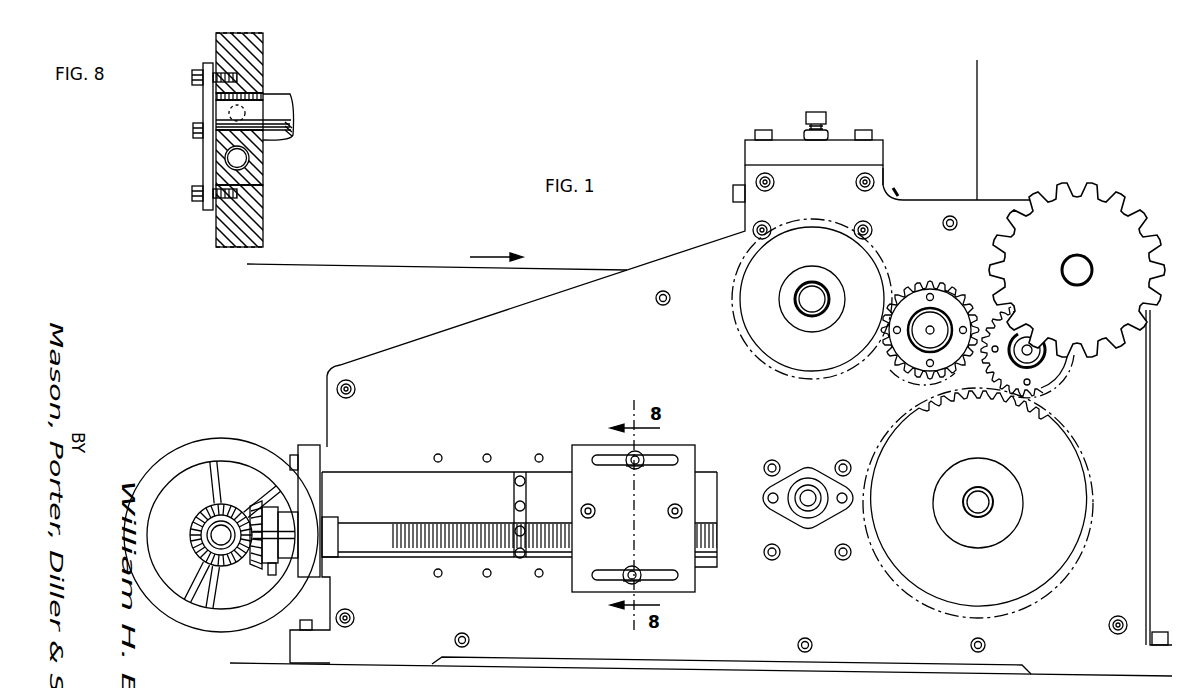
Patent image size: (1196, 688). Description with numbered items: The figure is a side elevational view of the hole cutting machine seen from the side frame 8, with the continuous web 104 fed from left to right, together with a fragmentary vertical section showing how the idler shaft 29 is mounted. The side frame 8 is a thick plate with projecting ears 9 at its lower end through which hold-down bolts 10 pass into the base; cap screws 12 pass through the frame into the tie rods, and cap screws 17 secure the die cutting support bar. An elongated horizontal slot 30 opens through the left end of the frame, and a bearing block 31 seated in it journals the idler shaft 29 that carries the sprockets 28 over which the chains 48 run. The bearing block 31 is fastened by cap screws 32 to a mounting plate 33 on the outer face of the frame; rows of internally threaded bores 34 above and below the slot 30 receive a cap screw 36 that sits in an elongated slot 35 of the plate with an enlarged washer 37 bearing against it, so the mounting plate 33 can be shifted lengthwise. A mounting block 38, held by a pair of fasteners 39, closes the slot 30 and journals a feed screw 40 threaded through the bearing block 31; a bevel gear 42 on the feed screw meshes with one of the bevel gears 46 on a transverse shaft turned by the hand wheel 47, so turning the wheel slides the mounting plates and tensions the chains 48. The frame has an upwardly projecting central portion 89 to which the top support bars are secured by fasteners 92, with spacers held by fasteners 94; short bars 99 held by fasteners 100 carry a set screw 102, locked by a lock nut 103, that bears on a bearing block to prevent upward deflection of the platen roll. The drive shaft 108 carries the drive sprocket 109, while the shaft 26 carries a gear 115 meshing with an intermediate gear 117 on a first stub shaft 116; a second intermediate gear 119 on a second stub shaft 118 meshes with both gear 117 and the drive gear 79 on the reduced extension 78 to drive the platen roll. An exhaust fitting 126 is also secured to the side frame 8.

In FIG. 8, the side frame 8 is at (258, 232).
In FIG. 1, the side frame 8 is at (437, 345).
In FIG. 1, the projecting ears 9 is at (290, 648).
In FIG. 1, the hold-down bolts 10 is at (318, 611).
In FIG. 1, the cap screws 12 is at (356, 389).
In FIG. 1, the cap screws 17 is at (774, 460).
In FIG. 1, the shaft 26 is at (993, 500).
In FIG. 1, the sprockets 28 is at (518, 514).
In FIG. 8, the idler shaft 29 is at (292, 98).
In FIG. 8, the elongated horizontal slot 30 is at (262, 175).
In FIG. 1, the elongated horizontal slot 30 is at (368, 472).
In FIG. 8, the bearing block 31 is at (262, 147).
In FIG. 8, the cap screws 32 is at (192, 132).
In FIG. 1, the cap screws 32 is at (668, 512).
In FIG. 8, the mounting plate 33 is at (204, 163).
In FIG. 1, the mounting plate 33 is at (700, 485).
In FIG. 1, the internally threaded bores 34 is at (484, 455).
In FIG. 1, the elongated slot 35 is at (676, 455).
In FIG. 8, the cap screw 36 is at (191, 80).
In FIG. 1, the cap screw 36 is at (641, 468).
In FIG. 8, the enlarged washer 37 is at (206, 72).
In FIG. 1, the enlarged washer 37 is at (628, 468).
In FIG. 1, the mounting block 38 is at (320, 477).
In FIG. 1, the fasteners 39 is at (294, 455).
In FIG. 8, the feed screw 40 is at (246, 163).
In FIG. 1, the feed screw 40 is at (372, 542).
In FIG. 1, the bevel gear 42 is at (252, 575).
In FIG. 1, the bevel gears 46 is at (208, 560).
In FIG. 1, the hand wheel 47 is at (202, 446).
In FIG. 1, the chains 48 is at (514, 490).
In FIG. 1, the reduced extension 78 is at (800, 298).
In FIG. 1, the drive gear 79 is at (808, 377).
In FIG. 1, the upwardly projecting central portion 89 is at (745, 160).
In FIG. 1, the fasteners 92 is at (774, 182).
In FIG. 1, the fasteners 94 is at (733, 192).
In FIG. 1, the short bars 99 is at (883, 162).
In FIG. 1, the fasteners 100 is at (760, 130).
In FIG. 1, the set screw 102 is at (826, 118).
In FIG. 1, the lock nut 103 is at (818, 140).
In FIG. 1, the continuous web 104 is at (977, 116).
In FIG. 1, the drive shaft 108 is at (1080, 282).
In FIG. 1, the drive sprocket 109 is at (1102, 207).
In FIG. 1, the gear 115 is at (1072, 463).
In FIG. 1, the first stub shaft 116 is at (1027, 337).
In FIG. 1, the intermediate gear 117 is at (1062, 370).
In FIG. 1, the second stub shaft 118 is at (908, 327).
In FIG. 1, the second intermediate gear 119 is at (945, 290).
In FIG. 1, the exhaust fitting 126 is at (808, 468).